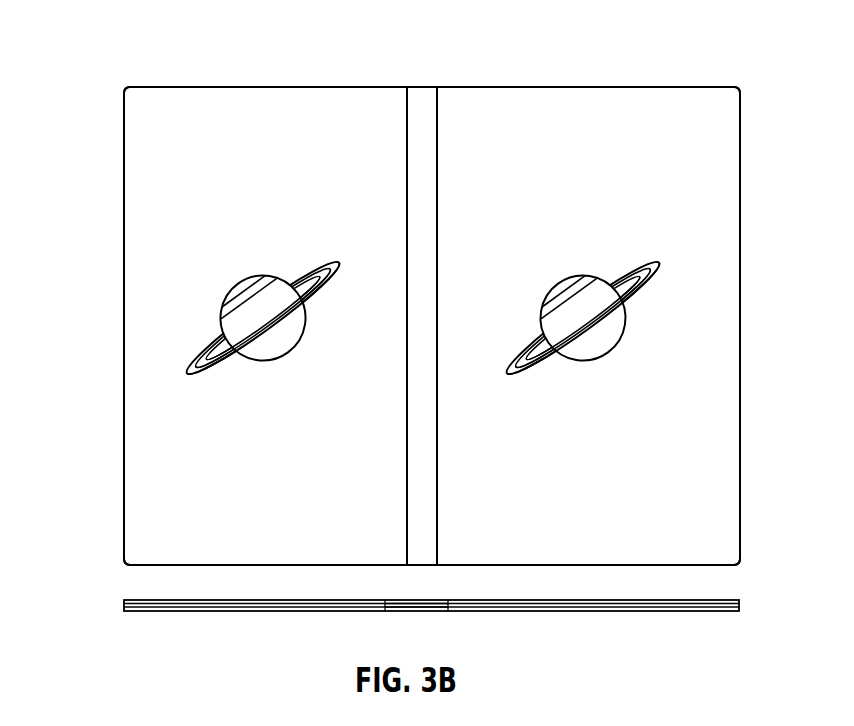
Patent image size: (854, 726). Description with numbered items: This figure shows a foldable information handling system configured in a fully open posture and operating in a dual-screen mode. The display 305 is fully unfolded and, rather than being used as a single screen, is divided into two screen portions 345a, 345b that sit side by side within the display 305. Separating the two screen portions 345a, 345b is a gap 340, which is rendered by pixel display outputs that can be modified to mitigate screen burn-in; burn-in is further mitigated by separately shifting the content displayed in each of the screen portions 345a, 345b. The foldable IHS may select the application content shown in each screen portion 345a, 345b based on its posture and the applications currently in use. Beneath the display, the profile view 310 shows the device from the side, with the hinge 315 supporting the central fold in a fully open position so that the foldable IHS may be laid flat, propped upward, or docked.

The display 305 is at (167, 225).
The first screen portion 345a is at (340, 107).
The second screen portion 345b is at (530, 113).
The gap 340 is at (423, 182).
The profile view 310 is at (123, 608).
The hinge 315 is at (415, 609).